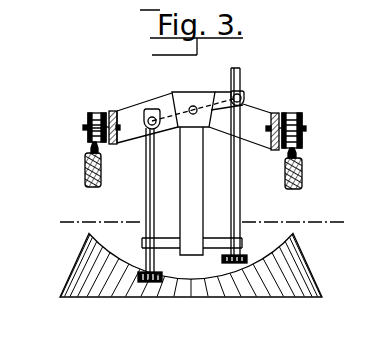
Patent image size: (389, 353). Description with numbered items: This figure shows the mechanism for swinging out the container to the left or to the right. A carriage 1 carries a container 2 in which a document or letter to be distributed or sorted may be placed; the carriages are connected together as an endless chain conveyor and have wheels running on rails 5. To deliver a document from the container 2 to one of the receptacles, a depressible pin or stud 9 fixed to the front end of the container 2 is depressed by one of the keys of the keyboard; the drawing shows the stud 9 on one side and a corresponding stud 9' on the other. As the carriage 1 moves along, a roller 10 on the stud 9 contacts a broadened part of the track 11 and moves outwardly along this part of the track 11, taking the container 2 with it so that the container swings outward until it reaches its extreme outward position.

The carriage 1 is at (250, 123).
The container 2 is at (187, 185).
The rails 5 is at (297, 155).
The depressible pin or stud 9 is at (140, 200).
The right brake rod 9' is at (246, 161).
The roller 10 is at (150, 283).
The track 11 is at (255, 285).